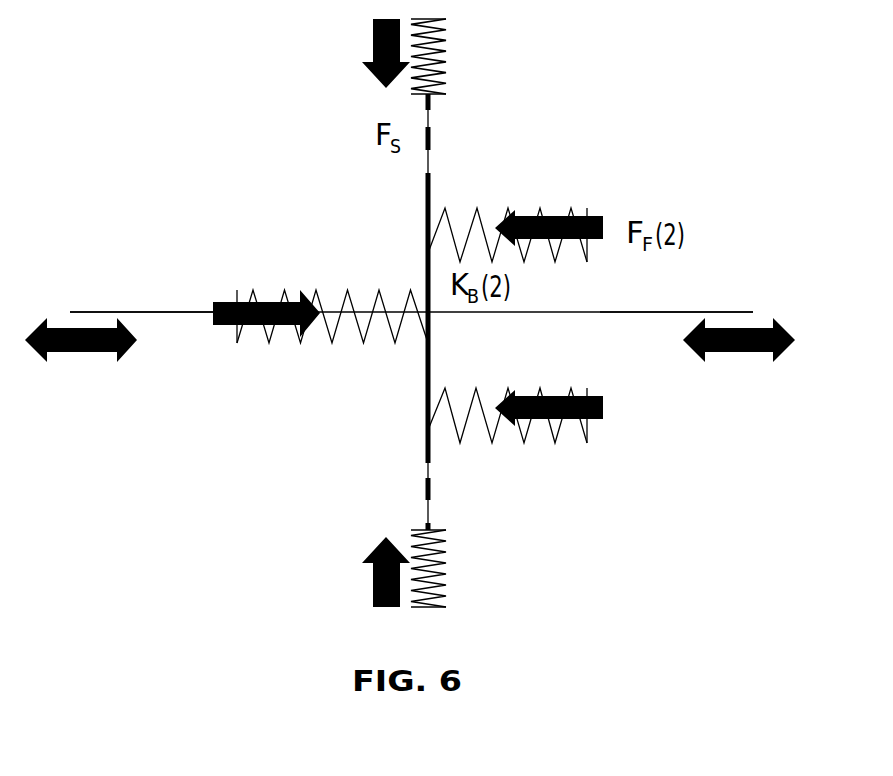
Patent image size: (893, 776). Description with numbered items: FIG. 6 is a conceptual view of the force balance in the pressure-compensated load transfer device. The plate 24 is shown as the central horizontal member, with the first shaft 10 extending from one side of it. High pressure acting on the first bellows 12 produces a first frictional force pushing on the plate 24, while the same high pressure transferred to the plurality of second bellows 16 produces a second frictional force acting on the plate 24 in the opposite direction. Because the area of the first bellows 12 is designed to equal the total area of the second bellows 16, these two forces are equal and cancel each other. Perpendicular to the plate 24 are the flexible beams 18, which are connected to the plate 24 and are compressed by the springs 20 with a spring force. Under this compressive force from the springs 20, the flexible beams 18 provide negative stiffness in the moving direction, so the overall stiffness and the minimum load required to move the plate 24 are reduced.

The first shaft 10 is at (82, 298).
The first bellows 12 is at (323, 275).
The second bellows 16 is at (547, 378).
The flexible beam 18 is at (431, 137).
The spring 20 is at (446, 44).
The plate 24 is at (431, 188).